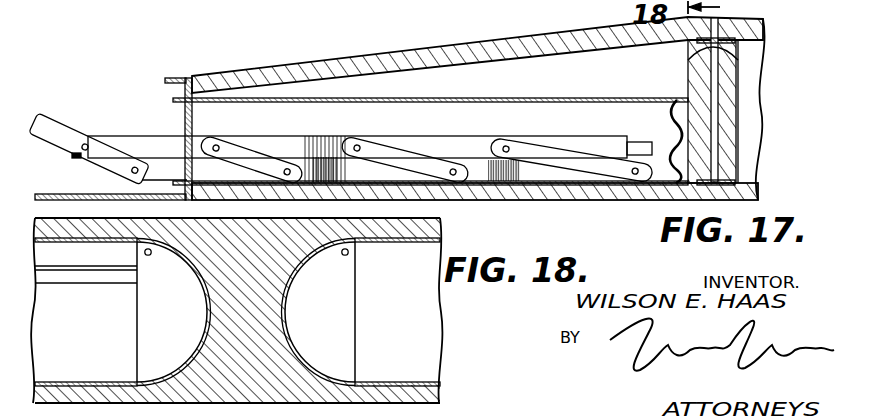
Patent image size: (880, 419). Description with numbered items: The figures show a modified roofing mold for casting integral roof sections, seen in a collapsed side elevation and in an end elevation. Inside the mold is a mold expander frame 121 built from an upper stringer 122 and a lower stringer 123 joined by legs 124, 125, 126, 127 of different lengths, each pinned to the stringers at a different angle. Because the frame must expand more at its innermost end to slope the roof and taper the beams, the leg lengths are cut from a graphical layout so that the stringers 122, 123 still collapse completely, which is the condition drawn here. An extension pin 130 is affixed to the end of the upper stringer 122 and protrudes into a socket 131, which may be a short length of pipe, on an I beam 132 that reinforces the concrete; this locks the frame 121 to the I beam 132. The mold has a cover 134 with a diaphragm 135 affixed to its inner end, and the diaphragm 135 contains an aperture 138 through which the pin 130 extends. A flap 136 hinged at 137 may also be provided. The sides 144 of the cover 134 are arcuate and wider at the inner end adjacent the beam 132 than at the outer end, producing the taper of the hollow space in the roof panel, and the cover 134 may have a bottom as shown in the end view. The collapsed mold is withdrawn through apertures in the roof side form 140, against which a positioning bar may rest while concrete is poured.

In FIG. 17, the mold expander frame 121 is at (92, 170).
In FIG. 17, the upper stringer 122 is at (448, 142).
In FIG. 17, the stringer 123 is at (322, 153).
In FIG. 17, the leg 124 is at (45, 120).
In FIG. 17, the leg 125 is at (248, 154).
In FIG. 17, the leg 126 is at (398, 152).
In FIG. 17, the leg 127 is at (551, 152).
In FIG. 17, the extension pin 130 is at (639, 147).
In FIG. 17, the socket 131 is at (699, 51).
In FIG. 17, the I beam 132 is at (724, 18).
In FIG. 17, the cover 134 is at (430, 141).
In FIG. 18, the cover 134 is at (100, 239).
In FIG. 17, the diaphragm 135 is at (675, 113).
In FIG. 18, the diaphragm 135 is at (246, 312).
In FIG. 18, the flap 136 is at (236, 310).
In FIG. 18, the hinge 137 is at (82, 272).
In FIG. 18, the aperture 138 is at (150, 256).
In FIG. 17, the roof side form 140 is at (186, 122).
In FIG. 18, the sides 144 is at (204, 341).